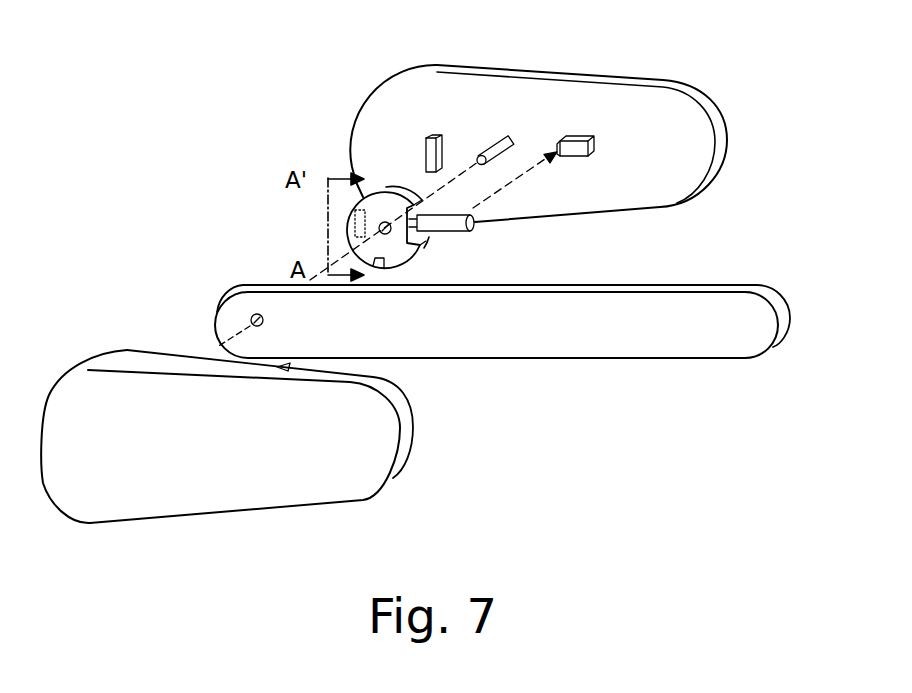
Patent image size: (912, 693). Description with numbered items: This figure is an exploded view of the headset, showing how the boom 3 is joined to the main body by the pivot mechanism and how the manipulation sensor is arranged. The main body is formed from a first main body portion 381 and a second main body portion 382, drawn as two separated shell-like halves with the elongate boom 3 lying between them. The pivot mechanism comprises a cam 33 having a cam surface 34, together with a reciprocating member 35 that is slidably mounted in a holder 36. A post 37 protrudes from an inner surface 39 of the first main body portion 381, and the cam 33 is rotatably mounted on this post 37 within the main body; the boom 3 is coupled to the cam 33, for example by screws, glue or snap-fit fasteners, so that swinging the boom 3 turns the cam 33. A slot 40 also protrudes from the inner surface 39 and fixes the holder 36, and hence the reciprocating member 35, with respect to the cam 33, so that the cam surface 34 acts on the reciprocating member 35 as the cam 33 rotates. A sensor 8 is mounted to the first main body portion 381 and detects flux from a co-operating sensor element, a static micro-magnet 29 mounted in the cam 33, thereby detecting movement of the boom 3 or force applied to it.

The boom 3 is at (687, 341).
The sensor 8 is at (442, 134).
The static micro-magnet 29 is at (352, 228).
The cam 33 is at (398, 243).
The cam surface 34 is at (432, 263).
The reciprocating member 35 is at (433, 238).
The holder 36 is at (473, 232).
The post 37 is at (509, 137).
The first main body portion 381 is at (703, 148).
The second main body portion 382 is at (383, 438).
The inner surface 39 is at (627, 203).
The slot 40 is at (580, 135).